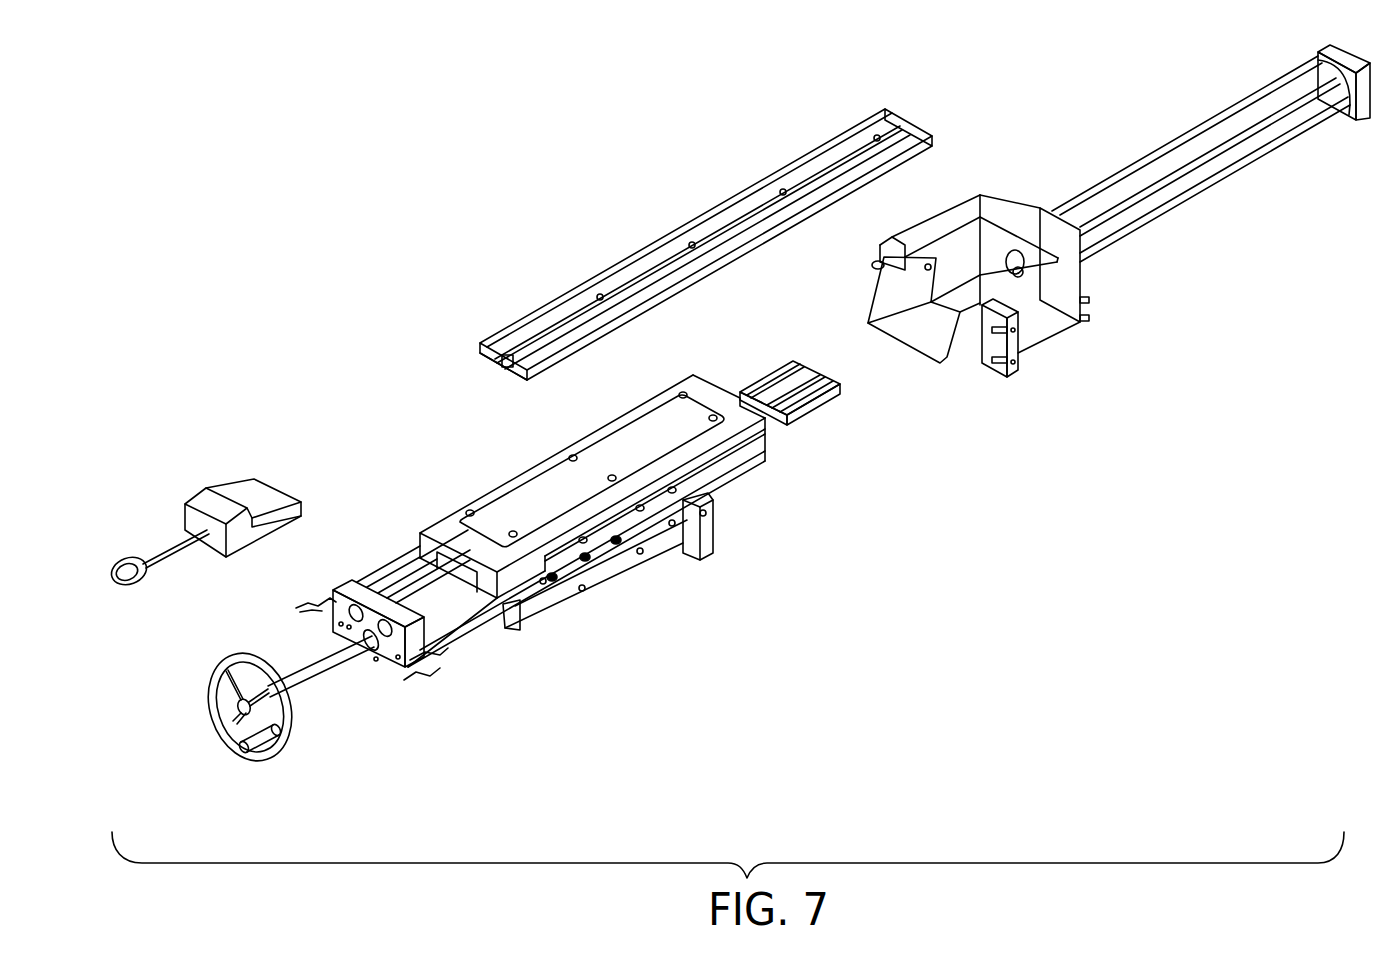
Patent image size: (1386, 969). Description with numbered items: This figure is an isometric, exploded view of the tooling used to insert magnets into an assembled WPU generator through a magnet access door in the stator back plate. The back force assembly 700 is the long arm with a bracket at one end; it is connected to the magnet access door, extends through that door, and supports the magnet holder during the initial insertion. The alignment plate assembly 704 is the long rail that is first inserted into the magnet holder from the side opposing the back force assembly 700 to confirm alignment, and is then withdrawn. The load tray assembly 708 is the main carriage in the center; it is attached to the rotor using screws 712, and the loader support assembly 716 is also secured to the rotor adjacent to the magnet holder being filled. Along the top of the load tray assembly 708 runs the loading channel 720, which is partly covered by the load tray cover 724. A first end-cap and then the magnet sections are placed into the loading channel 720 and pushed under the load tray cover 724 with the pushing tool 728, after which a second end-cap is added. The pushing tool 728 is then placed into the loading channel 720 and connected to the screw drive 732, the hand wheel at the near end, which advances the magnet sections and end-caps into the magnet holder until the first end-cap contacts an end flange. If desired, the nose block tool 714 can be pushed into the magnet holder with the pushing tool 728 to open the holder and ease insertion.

The back force assembly 700 is at (1057, 332).
The alignment plate assembly 704 is at (915, 113).
The load tray assembly 708 is at (569, 608).
The screws 712 is at (704, 522).
The nose block tool 714 is at (838, 398).
The loader support assembly 716 is at (655, 566).
The loading channel 720 is at (432, 603).
The load tray cover 724 is at (441, 525).
The pushing tool 728 is at (185, 512).
The screw drive 732 is at (285, 749).